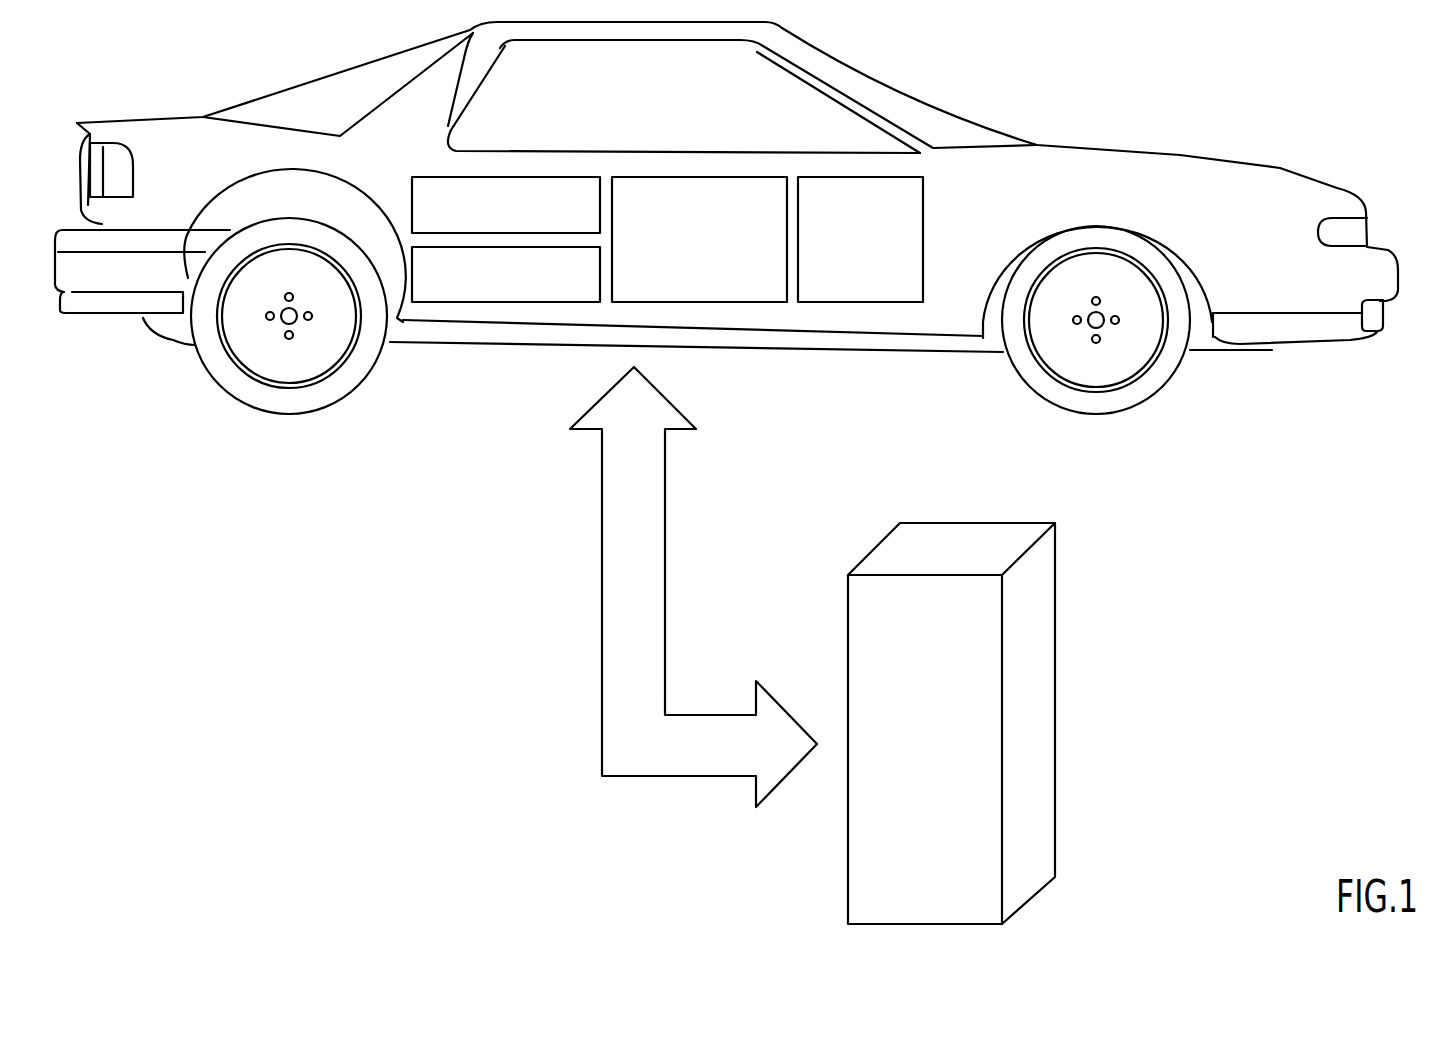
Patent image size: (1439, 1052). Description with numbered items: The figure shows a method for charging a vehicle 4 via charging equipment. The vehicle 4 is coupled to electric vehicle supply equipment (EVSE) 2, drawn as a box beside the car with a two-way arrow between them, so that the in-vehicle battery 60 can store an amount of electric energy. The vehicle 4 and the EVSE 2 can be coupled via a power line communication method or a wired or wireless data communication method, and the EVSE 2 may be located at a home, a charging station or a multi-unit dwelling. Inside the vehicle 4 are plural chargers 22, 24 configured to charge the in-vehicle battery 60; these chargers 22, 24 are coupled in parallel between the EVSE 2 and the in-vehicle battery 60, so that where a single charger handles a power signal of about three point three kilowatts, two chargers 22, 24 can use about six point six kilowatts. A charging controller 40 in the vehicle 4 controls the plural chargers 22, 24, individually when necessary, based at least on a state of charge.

The electric vehicle supply equipment (EVSE) 2 is at (1058, 698).
The vehicle 4 is at (1167, 155).
The charger 22 is at (410, 206).
The charger 24 is at (505, 303).
The charging controller 40 is at (698, 176).
The in-vehicle battery 60 is at (925, 230).